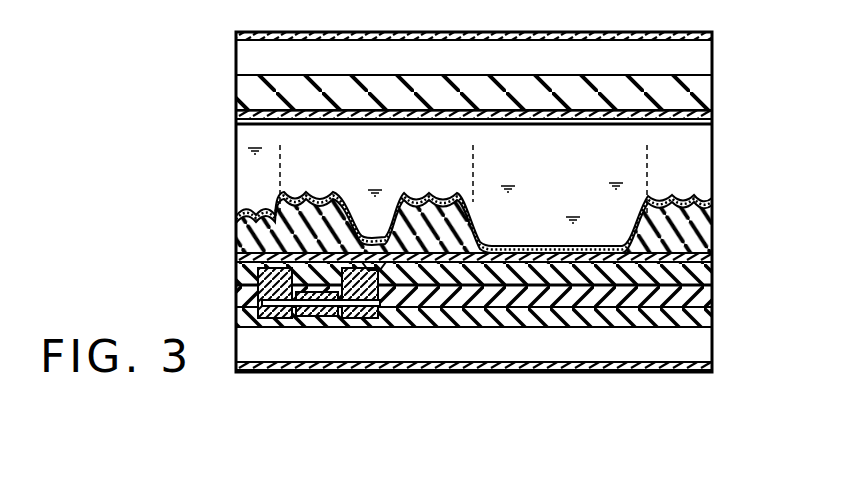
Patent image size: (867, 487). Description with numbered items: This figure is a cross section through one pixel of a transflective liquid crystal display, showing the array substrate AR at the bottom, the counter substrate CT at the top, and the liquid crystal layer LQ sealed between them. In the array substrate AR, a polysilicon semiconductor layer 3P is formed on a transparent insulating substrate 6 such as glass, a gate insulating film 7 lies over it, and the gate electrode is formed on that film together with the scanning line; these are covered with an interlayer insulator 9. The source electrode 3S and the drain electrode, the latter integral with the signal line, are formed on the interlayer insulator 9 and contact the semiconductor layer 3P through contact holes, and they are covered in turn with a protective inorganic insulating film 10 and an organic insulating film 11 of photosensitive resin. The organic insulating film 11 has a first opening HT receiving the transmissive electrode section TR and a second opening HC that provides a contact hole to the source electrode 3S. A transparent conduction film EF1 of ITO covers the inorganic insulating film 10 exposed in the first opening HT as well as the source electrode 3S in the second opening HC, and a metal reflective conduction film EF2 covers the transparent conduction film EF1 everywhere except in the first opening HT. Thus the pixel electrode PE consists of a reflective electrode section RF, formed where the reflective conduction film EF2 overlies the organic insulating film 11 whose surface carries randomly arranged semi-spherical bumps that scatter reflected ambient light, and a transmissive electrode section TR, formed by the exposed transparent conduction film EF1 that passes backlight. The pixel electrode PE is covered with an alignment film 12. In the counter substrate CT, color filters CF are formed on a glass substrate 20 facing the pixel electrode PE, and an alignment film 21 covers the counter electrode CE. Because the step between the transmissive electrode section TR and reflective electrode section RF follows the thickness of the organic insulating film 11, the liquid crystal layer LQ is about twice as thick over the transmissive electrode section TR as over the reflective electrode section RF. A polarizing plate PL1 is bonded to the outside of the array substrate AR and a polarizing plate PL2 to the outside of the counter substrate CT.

The polarizing plate PL2 is at (712, 34).
The counter substrate glass 20 is at (712, 54).
The color filter CF is at (712, 88).
The counter electrode CE is at (712, 115).
The alignment film 21 is at (712, 125).
The pixel electrode PE is at (280, 138).
The reflective electrode section RF is at (473, 155).
The transmissive electrode section TR is at (647, 155).
The alignment film 12 is at (712, 197).
The reflective conduction film EF2 is at (712, 208).
The organic insulating film 11 is at (712, 232).
The first opening HT is at (712, 258).
The protective inorganic insulating film 10 is at (712, 276).
The interlayer insulator 9 is at (712, 300).
The gate insulating film 7 is at (712, 345).
The transparent insulating substrate 6 is at (712, 366).
The polarizing plate PL1 is at (712, 373).
The source electrode 3S is at (368, 320).
The polysilicon semiconductor layer 3P is at (318, 308).
The second opening HC is at (372, 272).
The transparent conduction film EF1 is at (580, 270).
The counter substrate CT is at (226, 33).
The liquid crystal layer LQ is at (226, 128).
The array substrate AR is at (226, 217).